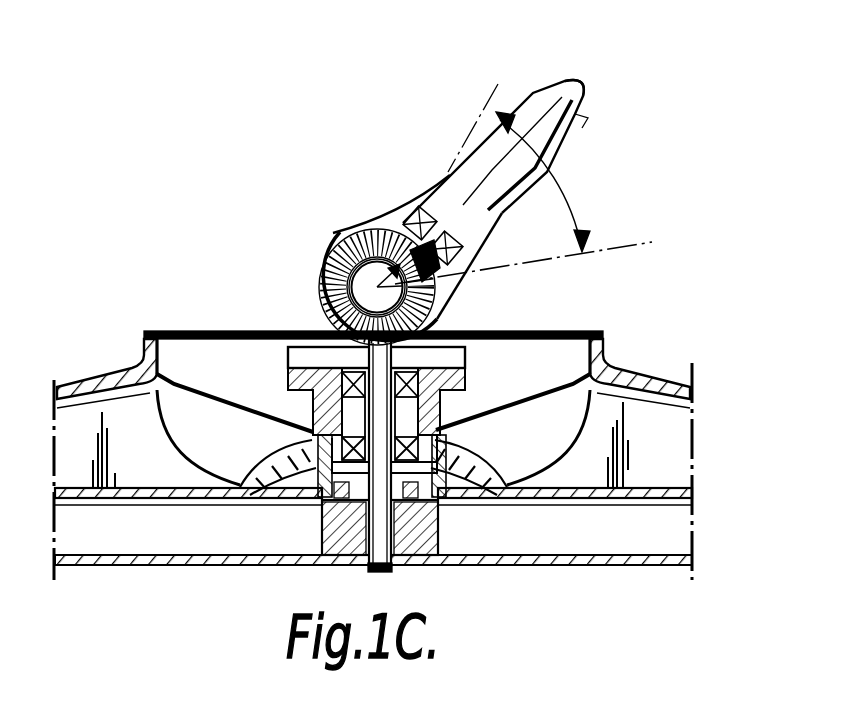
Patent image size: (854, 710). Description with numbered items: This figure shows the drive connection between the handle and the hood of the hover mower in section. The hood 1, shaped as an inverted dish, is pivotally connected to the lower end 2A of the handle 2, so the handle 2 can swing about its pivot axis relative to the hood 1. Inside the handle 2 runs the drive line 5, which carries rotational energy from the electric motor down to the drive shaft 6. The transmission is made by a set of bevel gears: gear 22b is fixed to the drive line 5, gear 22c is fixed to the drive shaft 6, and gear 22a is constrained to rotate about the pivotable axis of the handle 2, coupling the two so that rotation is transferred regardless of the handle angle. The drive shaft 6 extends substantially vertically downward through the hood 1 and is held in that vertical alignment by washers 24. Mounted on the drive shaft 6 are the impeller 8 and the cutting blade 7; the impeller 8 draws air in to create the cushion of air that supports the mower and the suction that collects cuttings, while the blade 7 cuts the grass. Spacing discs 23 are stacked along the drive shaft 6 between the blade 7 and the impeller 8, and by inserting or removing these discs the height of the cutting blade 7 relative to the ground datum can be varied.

The hood 1 is at (640, 372).
The handle 2 is at (582, 126).
The lower end of handle 2A is at (340, 228).
The drive line 5 is at (530, 92).
The drive shaft 6 is at (388, 572).
The cutting blade 7 is at (602, 562).
The impeller 8 is at (653, 443).
The bevel gear 22a is at (323, 275).
The bevel gear 22b is at (437, 297).
The bevel gear 22c is at (317, 317).
The spacing discs 23 is at (320, 548).
The washers 24 is at (467, 352).